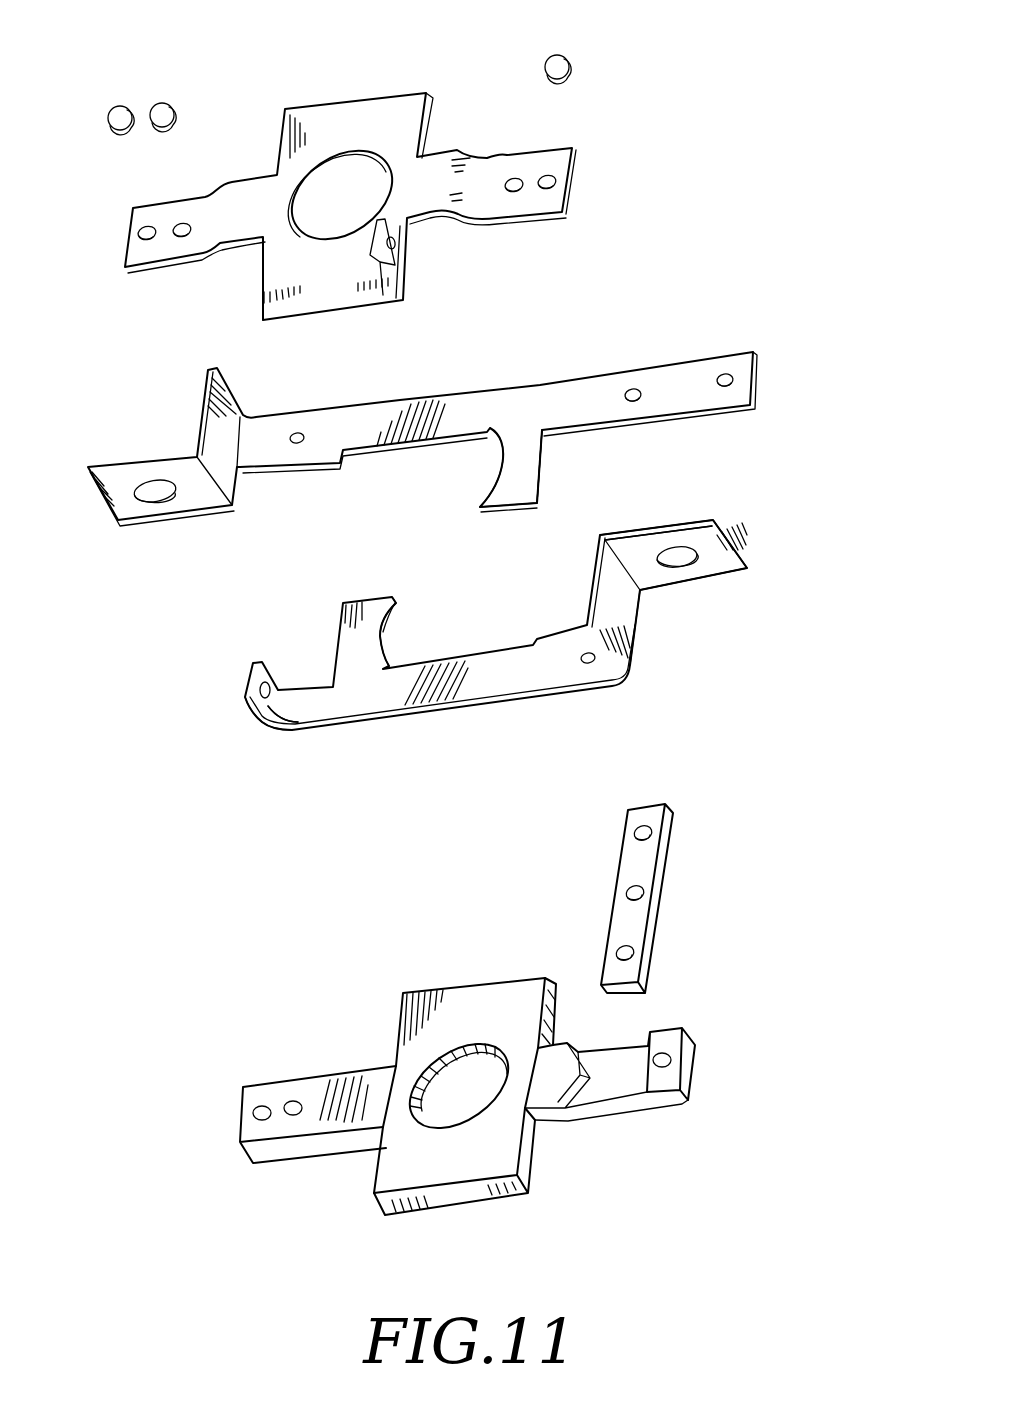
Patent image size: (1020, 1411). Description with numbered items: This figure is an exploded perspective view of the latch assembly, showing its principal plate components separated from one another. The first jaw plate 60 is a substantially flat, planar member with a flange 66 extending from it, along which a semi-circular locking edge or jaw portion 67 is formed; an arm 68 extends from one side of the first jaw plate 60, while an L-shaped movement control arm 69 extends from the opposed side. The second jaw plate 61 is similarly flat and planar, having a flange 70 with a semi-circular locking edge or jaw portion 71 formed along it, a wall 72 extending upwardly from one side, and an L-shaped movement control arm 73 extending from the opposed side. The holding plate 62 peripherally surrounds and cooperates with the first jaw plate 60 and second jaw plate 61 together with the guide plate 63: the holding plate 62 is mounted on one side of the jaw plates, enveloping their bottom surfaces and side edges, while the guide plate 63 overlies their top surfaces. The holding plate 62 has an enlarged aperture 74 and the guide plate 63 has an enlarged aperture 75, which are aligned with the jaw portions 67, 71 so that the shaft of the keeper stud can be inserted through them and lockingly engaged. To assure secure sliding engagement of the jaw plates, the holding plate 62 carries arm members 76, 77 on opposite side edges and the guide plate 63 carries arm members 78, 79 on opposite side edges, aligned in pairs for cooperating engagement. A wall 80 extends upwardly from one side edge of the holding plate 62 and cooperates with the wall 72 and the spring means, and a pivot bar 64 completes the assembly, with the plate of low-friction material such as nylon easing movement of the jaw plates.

The first jaw plate 60 is at (537, 400).
The second jaw plate 61 is at (520, 670).
The holding plate 62 is at (376, 130).
The guide plate 63 is at (495, 1013).
The pivot bar 64 is at (658, 890).
The flange 66 is at (543, 462).
The jaw portion 67 is at (497, 472).
The arm 68 is at (680, 380).
The L-shaped movement control arm 69 is at (143, 453).
The flange 70 is at (363, 653).
The jaw portion 71 is at (388, 623).
The wall 72 is at (297, 710).
The L-shaped movement control arm 73 is at (698, 572).
The enlarged aperture 74 is at (302, 185).
The enlarged aperture 75 is at (432, 1072).
The arm member 76 is at (550, 165).
The arm member 77 is at (163, 252).
The arm member 78 is at (278, 1098).
The arm member 79 is at (613, 1085).
The wall 80 is at (400, 228).